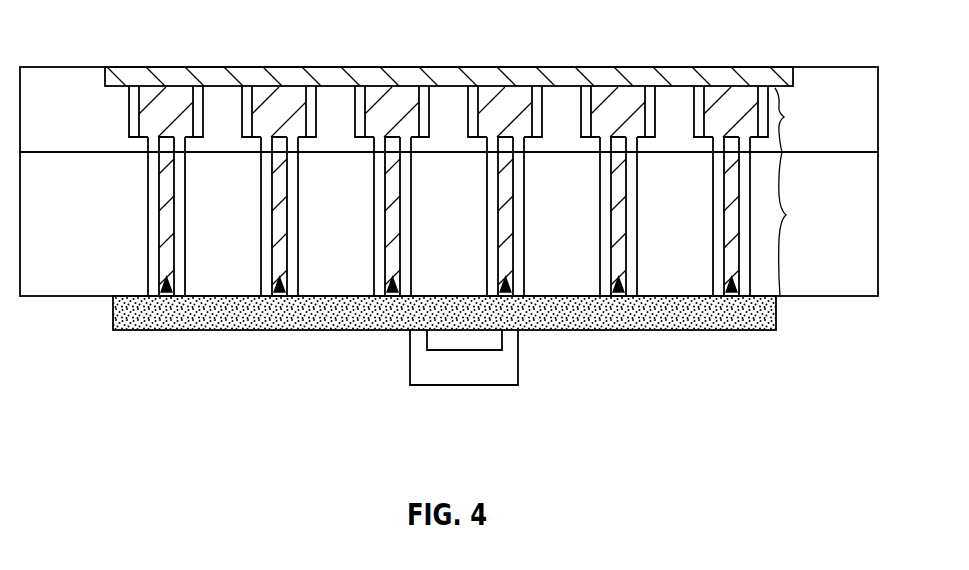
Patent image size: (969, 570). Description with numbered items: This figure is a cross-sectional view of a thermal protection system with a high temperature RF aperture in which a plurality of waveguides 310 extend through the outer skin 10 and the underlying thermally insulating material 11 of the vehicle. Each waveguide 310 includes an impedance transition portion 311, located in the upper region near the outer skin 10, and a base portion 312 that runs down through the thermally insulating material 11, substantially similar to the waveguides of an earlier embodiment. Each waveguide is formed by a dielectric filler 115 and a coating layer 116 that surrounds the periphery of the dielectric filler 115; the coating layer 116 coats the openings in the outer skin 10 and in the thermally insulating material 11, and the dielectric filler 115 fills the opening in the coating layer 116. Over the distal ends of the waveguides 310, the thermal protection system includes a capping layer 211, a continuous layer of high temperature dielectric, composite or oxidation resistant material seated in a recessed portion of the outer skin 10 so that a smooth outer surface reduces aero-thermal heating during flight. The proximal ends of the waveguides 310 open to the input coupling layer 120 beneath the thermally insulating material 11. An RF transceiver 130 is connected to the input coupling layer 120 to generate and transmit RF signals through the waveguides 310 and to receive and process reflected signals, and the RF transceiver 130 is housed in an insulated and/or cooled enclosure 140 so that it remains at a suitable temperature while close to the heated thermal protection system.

The outer skin 10 is at (862, 98).
The thermally insulating material 11 is at (862, 253).
The dielectric filler 115 is at (163, 102).
The coating layer 116 is at (133, 115).
The input coupling layer 120 is at (765, 313).
The RF transceiver 130 is at (502, 340).
The insulated and/or cooled enclosure 140 is at (503, 385).
The capping layer 211 is at (757, 77).
The waveguide 310 is at (166, 280).
The impedance transition portion 311 is at (784, 117).
The base portion 312 is at (786, 215).